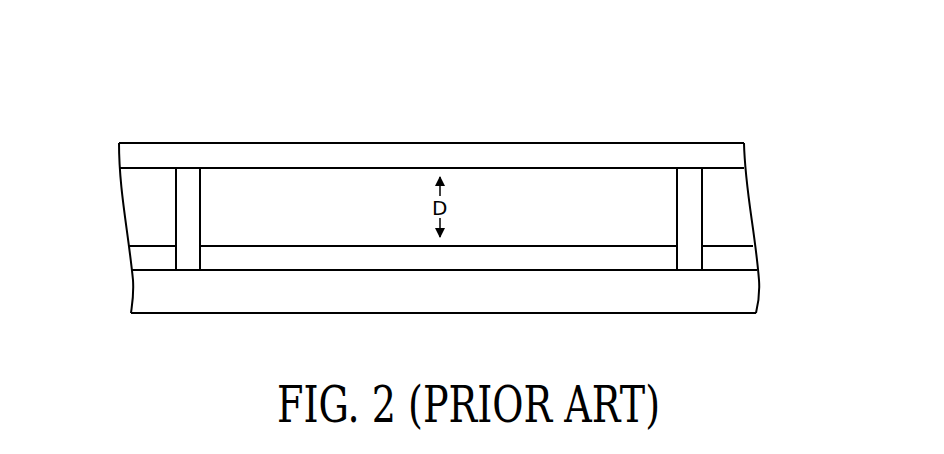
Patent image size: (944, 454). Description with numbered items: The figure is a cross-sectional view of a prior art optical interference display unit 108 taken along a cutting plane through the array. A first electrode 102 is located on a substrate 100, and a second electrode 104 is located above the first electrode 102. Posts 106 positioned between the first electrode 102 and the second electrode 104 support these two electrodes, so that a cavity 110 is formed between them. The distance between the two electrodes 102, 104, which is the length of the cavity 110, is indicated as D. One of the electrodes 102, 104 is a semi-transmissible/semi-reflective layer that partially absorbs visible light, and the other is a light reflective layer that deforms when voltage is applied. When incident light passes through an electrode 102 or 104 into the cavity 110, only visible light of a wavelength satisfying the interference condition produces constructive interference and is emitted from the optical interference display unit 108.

The substrate 100 is at (720, 302).
The first electrode 102 is at (740, 258).
The second electrode 104 is at (730, 157).
The post 106 is at (690, 211).
The optical interference display unit 108 is at (441, 108).
The cavity 110 is at (250, 209).